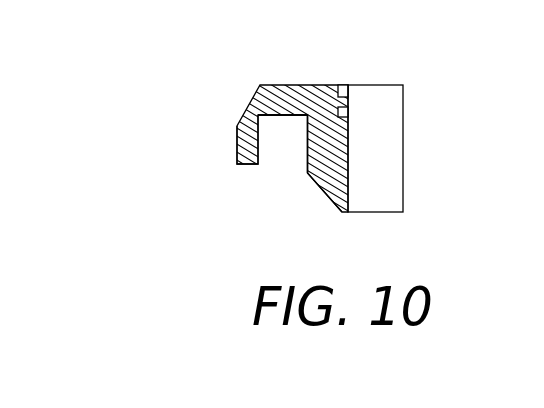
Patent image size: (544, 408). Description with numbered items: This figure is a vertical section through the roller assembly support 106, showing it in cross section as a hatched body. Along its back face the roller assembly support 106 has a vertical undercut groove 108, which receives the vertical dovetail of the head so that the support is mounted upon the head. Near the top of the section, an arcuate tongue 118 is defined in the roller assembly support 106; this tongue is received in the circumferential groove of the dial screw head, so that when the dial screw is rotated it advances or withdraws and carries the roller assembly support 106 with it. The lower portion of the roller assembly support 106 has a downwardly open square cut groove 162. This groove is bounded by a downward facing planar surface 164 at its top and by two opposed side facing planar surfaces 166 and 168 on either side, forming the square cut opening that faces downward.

The roller assembly support 106 is at (285, 85).
The vertical undercut groove 108 is at (383, 150).
The arcuate tongue 118 is at (349, 102).
The square cut groove 162 is at (284, 118).
The downward facing planar surface 164 is at (284, 118).
The side facing planar surface 166 is at (259, 148).
The side facing planar surface 168 is at (307, 149).